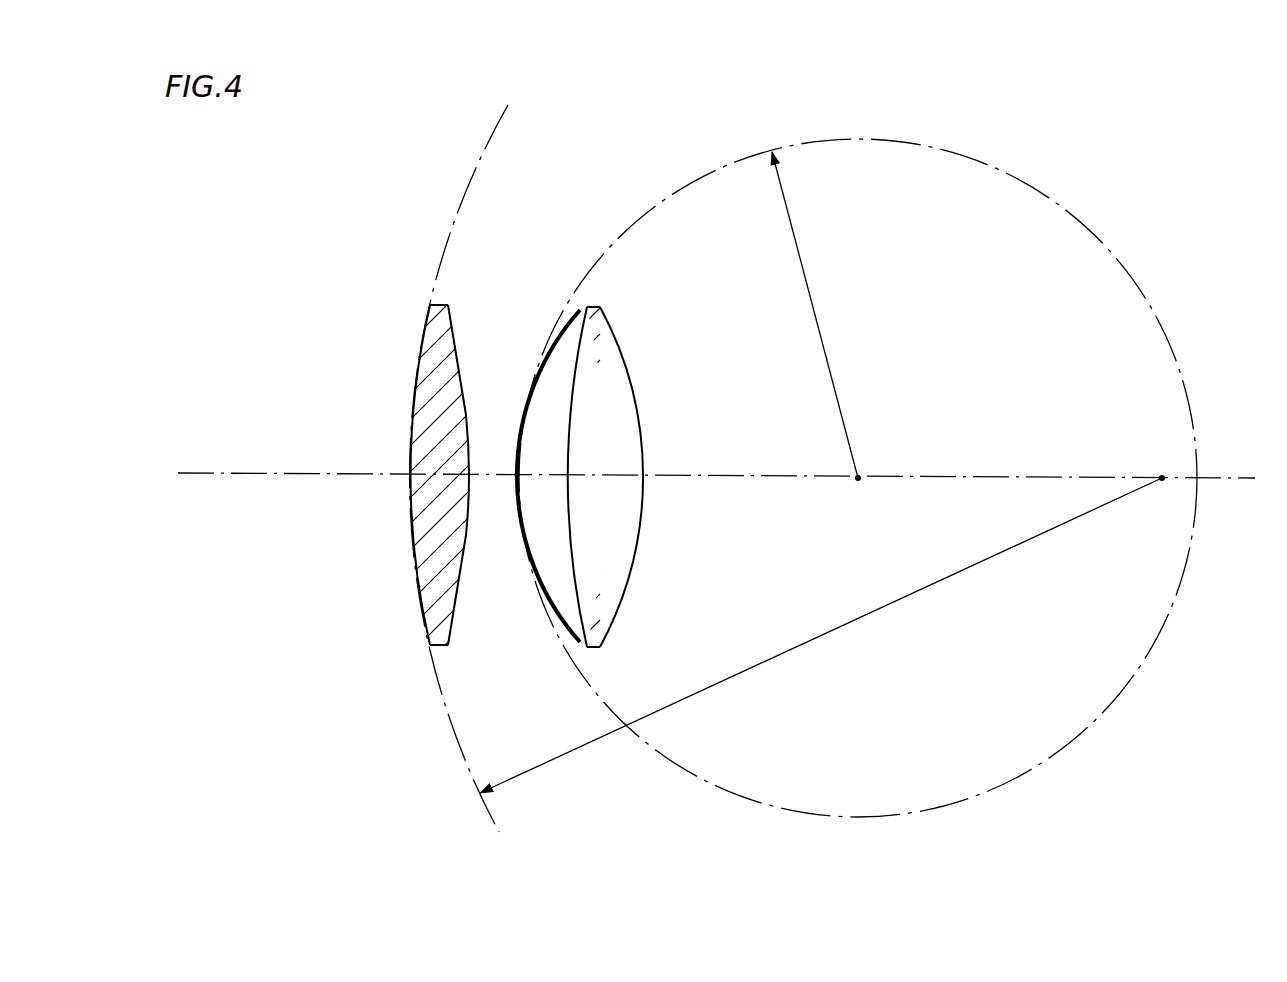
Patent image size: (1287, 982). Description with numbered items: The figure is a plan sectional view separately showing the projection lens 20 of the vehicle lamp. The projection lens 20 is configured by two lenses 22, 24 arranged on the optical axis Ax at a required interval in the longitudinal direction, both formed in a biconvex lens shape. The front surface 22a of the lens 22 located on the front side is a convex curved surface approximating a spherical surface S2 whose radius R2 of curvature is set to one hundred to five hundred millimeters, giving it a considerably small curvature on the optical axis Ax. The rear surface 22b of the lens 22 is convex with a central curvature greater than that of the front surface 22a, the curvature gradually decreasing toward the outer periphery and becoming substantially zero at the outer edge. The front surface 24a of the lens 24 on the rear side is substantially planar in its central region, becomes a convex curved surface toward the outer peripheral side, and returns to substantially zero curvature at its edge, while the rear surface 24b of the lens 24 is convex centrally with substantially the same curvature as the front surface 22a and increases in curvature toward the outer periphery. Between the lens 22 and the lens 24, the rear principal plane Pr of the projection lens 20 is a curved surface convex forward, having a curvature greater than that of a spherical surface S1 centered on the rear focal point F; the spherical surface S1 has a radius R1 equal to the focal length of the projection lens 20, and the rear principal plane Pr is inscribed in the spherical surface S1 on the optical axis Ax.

The projection lens 20 is at (499, 536).
The lens 22 is at (441, 536).
The front surface 22a is at (413, 565).
The rear surface 22b is at (464, 567).
The lens 24 is at (534, 536).
The front surface 24a is at (567, 500).
The rear surface 24b is at (643, 500).
The rear principal plane Pr is at (548, 350).
The optical axis Ax is at (234, 473).
The spherical surface S1 is at (1085, 225).
The spherical surface S2 is at (445, 710).
The radius R1 is at (815, 315).
The radius of curvature R2 is at (822, 634).
The rear focal point F is at (862, 474).